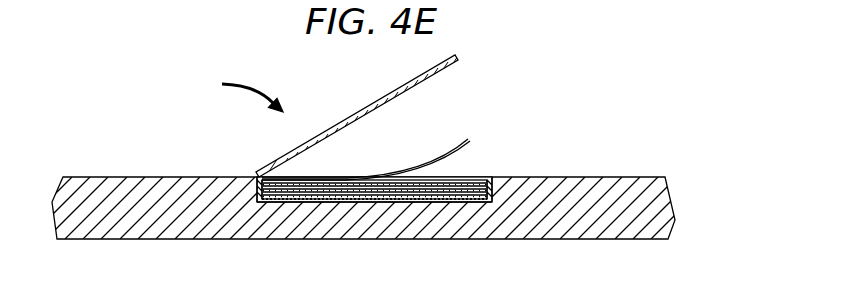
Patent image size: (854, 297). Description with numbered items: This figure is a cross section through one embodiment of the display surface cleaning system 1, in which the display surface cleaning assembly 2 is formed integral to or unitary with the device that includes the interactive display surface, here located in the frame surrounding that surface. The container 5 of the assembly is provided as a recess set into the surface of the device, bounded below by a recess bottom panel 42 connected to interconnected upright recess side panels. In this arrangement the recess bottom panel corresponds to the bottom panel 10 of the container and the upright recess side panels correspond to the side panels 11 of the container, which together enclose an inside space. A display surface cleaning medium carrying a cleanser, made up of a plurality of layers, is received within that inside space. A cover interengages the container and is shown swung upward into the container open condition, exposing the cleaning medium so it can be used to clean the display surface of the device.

The display surface cleaning system 1 is at (639, 106).
The display surface cleaning assembly 2 is at (245, 93).
The container 5 is at (488, 177).
The bottom panel 10 is at (351, 203).
The side panels 11 is at (253, 175).
The recess bottom panel 42 is at (393, 203).